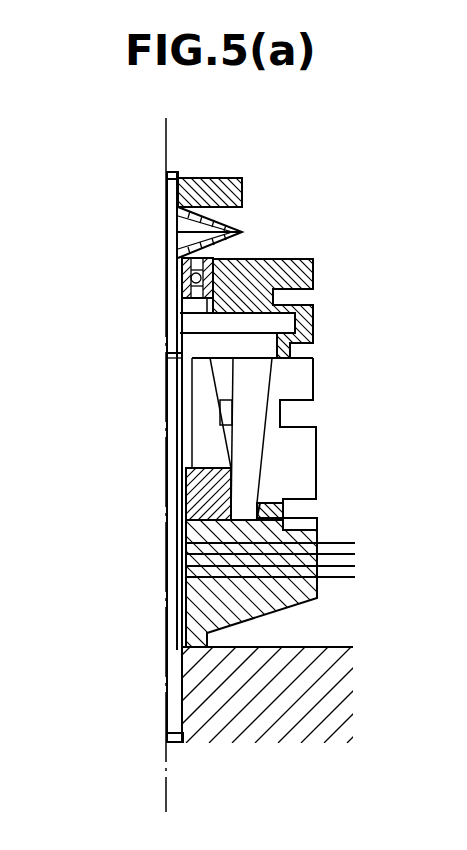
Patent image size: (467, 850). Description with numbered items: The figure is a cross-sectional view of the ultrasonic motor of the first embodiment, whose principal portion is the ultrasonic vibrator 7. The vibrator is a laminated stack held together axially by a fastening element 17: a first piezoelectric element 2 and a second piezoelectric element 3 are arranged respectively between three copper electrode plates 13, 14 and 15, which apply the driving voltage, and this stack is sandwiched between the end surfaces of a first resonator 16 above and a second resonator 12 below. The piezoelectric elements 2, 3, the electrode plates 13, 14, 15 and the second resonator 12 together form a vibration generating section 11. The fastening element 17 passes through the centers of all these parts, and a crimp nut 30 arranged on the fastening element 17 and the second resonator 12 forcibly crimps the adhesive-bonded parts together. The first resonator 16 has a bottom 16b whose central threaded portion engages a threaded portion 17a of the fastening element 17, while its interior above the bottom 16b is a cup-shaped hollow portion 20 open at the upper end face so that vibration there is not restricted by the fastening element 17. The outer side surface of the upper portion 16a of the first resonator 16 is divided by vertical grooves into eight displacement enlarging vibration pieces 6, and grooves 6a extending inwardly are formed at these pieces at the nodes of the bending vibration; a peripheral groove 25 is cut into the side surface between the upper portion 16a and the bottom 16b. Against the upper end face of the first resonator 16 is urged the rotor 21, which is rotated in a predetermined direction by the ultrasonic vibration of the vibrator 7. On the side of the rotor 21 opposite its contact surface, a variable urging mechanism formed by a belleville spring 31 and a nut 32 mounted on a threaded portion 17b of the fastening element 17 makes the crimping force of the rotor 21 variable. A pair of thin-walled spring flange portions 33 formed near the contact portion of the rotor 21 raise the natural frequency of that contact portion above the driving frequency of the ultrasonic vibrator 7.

The first piezoelectric element 2 is at (184, 550).
The second piezoelectric element 3 is at (184, 578).
The displacement enlarging vibration piece 6 is at (306, 375).
The groove 6a is at (228, 412).
The ultrasonic vibrator 7 is at (57, 652).
The vibration generating section 11 is at (423, 535).
The second resonator 12 is at (283, 601).
The electrode plate 13 is at (357, 546).
The electrode plate 14 is at (357, 558).
The electrode plate 15 is at (357, 570).
The first resonator 16 is at (131, 535).
The upper portion of the first resonator 16a is at (466, 420).
The bottom of the first resonator 16b is at (318, 528).
The fastening element 17 is at (176, 160).
The threaded portion 17a is at (167, 708).
The threaded portion 17b is at (166, 195).
The hollow portion 20 is at (205, 393).
The rotor 21 is at (293, 260).
The peripheral groove 25 is at (298, 513).
The crimp nut 30 is at (184, 497).
The belleville spring 31 is at (238, 233).
The nut 32 is at (233, 178).
The thin-walled spring flange portion 33 is at (312, 350).